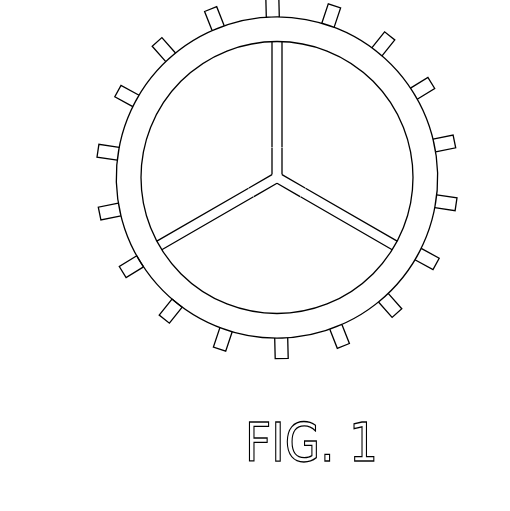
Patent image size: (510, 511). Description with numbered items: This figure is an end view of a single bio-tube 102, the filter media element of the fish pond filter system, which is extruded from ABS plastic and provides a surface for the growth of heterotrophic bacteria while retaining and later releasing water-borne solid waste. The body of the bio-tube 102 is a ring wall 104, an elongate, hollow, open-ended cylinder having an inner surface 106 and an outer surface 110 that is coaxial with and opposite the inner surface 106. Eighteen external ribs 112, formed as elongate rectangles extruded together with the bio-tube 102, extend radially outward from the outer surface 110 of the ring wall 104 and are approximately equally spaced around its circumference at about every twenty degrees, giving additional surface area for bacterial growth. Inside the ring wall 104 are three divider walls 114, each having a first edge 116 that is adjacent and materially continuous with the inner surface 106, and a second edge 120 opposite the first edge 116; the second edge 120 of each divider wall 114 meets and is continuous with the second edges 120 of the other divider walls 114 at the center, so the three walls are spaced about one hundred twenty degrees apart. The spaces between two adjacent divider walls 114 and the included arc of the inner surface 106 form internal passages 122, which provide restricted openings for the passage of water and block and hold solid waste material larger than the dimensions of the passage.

The bio-tube 102 is at (251, 201).
The ring wall 104 is at (248, 179).
The inner surface 106 is at (303, 312).
The outer surface 110 is at (155, 290).
The external ribs 112 is at (118, 267).
The divider walls 114 is at (209, 208).
The first edge 116 is at (271, 44).
The second edge 120 is at (278, 177).
The internal passages 122 is at (223, 277).